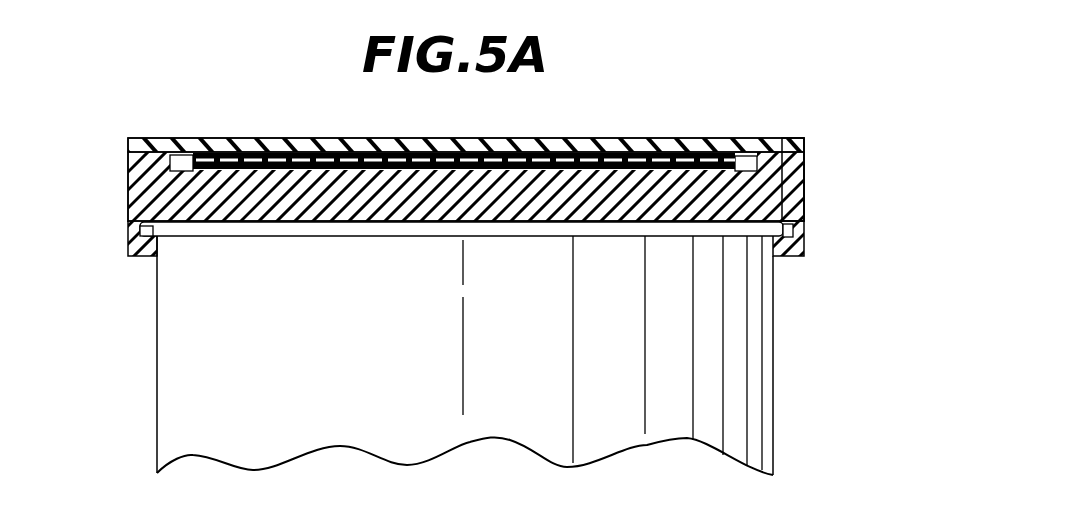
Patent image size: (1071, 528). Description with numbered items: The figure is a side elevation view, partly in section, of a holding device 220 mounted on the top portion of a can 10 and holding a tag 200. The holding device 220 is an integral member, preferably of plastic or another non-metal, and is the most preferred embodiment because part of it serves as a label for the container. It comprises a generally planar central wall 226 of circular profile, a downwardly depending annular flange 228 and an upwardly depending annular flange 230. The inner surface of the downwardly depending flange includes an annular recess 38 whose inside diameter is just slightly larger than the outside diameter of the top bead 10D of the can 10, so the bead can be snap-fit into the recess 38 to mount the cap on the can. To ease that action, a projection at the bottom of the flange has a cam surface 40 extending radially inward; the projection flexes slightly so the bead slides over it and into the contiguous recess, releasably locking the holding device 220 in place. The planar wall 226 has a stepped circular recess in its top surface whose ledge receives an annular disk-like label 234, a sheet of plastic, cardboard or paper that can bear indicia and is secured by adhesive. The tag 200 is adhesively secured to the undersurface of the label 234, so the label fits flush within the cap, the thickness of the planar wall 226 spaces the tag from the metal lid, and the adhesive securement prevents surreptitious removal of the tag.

The can 10 is at (153, 381).
The top bead 10D is at (218, 227).
The annular recess 38 is at (130, 240).
The cam surface 40 is at (148, 258).
The tag 200 is at (749, 154).
The holding device 220 is at (648, 108).
The planar central wall 226 is at (348, 205).
The downwardly depending annular flange 228 is at (802, 238).
The upwardly depending annular flange 230 is at (795, 142).
The label 234 is at (220, 146).